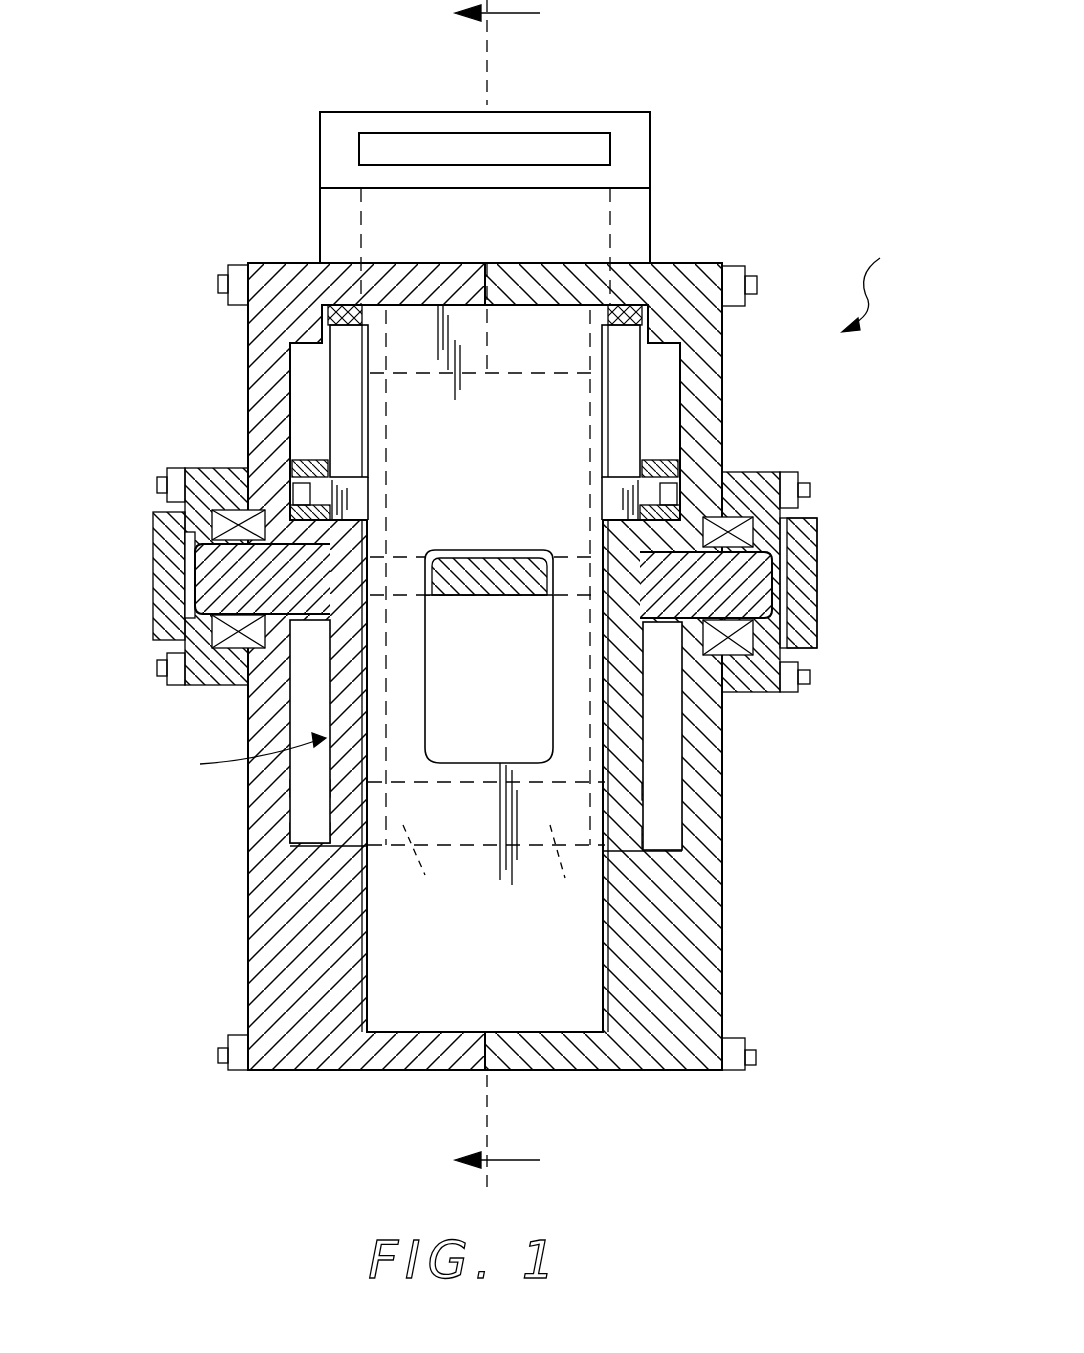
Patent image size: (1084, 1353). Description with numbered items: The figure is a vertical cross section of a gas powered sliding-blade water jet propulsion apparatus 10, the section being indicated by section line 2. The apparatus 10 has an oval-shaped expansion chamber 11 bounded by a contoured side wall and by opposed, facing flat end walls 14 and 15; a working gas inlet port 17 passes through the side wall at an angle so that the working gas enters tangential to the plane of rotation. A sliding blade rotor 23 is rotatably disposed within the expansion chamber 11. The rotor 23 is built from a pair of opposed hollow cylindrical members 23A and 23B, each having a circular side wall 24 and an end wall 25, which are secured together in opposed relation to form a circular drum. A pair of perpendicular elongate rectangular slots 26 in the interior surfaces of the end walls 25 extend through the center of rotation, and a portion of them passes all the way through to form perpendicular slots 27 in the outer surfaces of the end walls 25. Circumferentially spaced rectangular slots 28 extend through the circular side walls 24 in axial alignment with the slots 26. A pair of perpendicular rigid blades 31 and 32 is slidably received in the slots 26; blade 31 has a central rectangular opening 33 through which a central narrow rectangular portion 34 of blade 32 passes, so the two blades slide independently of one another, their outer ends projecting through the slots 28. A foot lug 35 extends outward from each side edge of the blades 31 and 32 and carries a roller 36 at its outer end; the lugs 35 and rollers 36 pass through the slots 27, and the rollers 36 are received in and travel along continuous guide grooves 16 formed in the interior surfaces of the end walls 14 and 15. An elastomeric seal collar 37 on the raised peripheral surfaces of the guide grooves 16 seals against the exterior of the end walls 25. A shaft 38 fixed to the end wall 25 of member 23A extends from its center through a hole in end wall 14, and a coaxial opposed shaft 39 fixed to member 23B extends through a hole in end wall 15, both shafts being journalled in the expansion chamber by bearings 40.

The section line 2- 2 is at (507, 595).
The sliding-blade water jet propulsion apparatus 10 is at (878, 286).
The expansion chamber 11 is at (248, 925).
The flat end wall 14 is at (368, 960).
The flat end wall 15 is at (602, 960).
The guide grooves 16 is at (262, 520).
The working gas inlet port 17 is at (590, 150).
The sliding blade rotor 23 is at (238, 756).
The hollow cylindrical member 23A is at (428, 868).
The hollow cylindrical member 23B is at (550, 873).
The circular side wall 24 is at (343, 322).
The end wall 25 is at (328, 710).
The elongate rectangular slots 26 is at (388, 468).
The rectangular perpendicular slots 27 is at (348, 393).
The rectangular slots 28 is at (534, 265).
The blade 31 is at (456, 999).
The blade 32 is at (489, 613).
The central rectangular opening 33 is at (425, 713).
The central narrow rectangular portion 34 is at (487, 594).
The foot lug 35 is at (350, 493).
The roller 36 is at (295, 493).
The elastomeric seal collar 37 is at (300, 475).
The shaft 38 is at (205, 583).
The shaft 39 is at (757, 575).
The bearings 40 is at (167, 478).